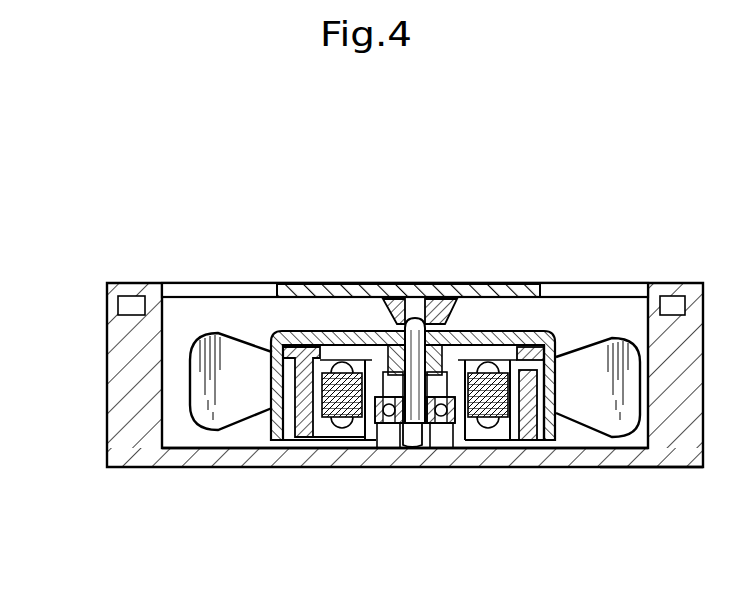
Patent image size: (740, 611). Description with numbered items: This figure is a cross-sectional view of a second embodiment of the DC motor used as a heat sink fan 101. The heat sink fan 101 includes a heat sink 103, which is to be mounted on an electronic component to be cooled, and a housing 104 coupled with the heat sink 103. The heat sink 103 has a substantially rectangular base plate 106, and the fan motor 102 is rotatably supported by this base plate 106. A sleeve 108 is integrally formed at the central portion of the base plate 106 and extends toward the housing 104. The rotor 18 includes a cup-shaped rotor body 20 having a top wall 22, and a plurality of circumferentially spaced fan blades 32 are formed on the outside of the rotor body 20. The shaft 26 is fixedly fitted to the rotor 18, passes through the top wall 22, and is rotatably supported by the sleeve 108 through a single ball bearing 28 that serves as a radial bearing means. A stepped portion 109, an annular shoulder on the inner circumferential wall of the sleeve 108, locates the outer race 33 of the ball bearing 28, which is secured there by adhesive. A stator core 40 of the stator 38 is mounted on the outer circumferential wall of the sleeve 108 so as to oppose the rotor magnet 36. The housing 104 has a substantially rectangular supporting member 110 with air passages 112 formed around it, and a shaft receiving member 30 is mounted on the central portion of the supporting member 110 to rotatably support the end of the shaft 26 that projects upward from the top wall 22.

The heat sink fan 101 is at (96, 464).
The heat sink 103 is at (641, 473).
The housing 104 is at (178, 283).
The base plate 106 is at (540, 458).
The sleeve 108 is at (362, 432).
The stepped portion 109 is at (378, 372).
The supporting member 110 is at (293, 290).
The air passages 112 is at (222, 290).
The fan motor 102 is at (542, 330).
The rotor 18 is at (258, 420).
The rotor body 20 is at (563, 427).
The top wall 22 is at (499, 331).
The shaft 26 is at (456, 298).
The ball bearing 28 is at (390, 440).
The shaft receiving member 30 is at (422, 316).
The fan blades 32 is at (613, 338).
The outer race 33 is at (437, 448).
The rotor magnet 36 is at (520, 440).
The stator 38 is at (332, 362).
The stator core 40 is at (472, 430).